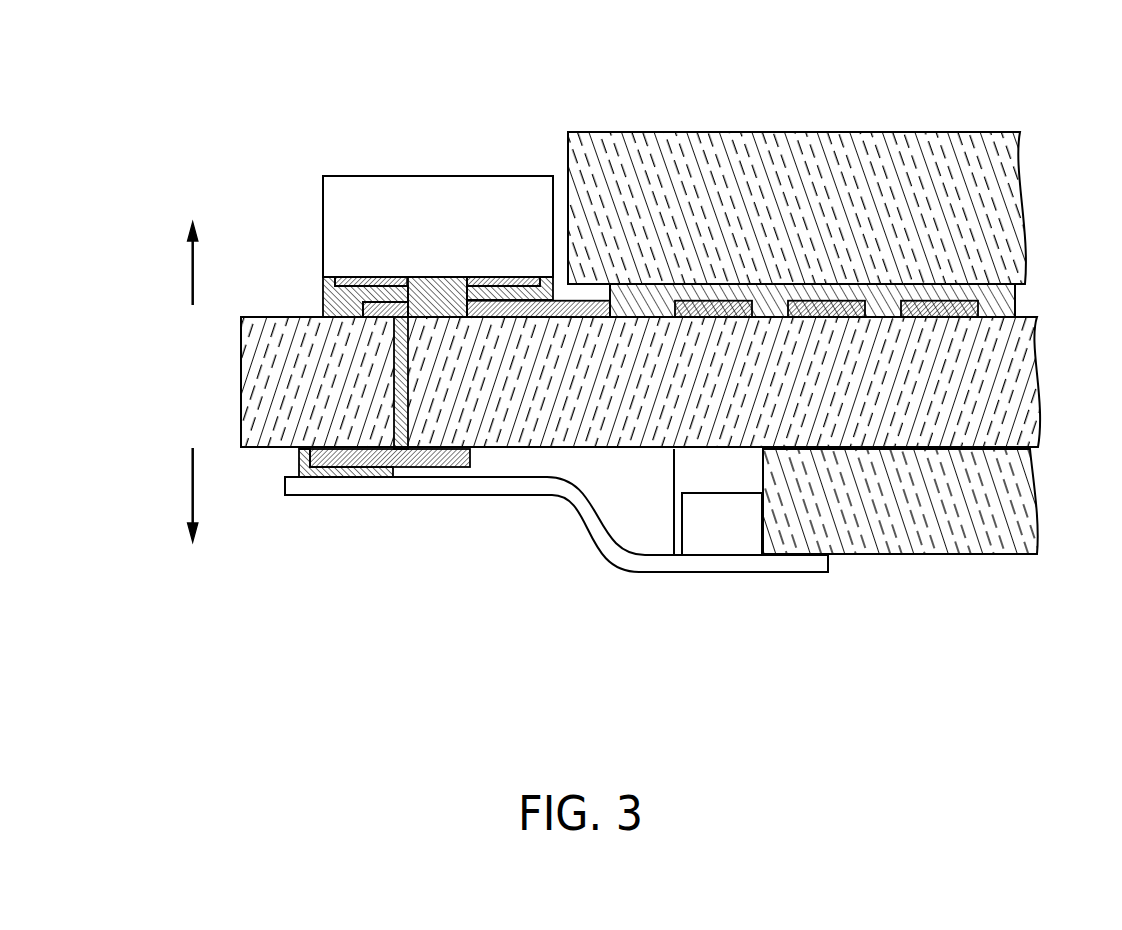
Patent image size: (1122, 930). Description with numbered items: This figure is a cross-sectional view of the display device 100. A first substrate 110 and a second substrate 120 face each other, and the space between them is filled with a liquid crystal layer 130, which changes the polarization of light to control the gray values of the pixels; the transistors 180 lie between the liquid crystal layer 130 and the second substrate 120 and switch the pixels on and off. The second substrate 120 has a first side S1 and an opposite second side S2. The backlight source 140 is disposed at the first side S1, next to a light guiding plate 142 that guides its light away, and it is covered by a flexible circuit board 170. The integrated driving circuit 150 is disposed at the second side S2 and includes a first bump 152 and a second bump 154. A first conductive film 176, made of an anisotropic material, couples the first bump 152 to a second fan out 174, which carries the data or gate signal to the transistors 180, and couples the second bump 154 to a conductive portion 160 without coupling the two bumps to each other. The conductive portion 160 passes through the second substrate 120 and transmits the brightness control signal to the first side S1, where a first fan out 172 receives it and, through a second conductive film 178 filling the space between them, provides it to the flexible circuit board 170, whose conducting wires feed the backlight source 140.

The display device 100 is at (230, 55).
The first substrate 110 is at (928, 165).
The second substrate 120 is at (1014, 393).
The liquid crystal layer 130 is at (997, 305).
The backlight source 140 is at (722, 533).
The light guiding plate 142 is at (934, 528).
The integrated driving circuit 150 is at (435, 207).
The first bump 152 is at (497, 280).
The second bump 154 is at (365, 277).
The conductive portion 160 is at (393, 385).
The flexible circuit board 170 is at (365, 485).
The first fan out 172 is at (433, 467).
The second fan out 174 is at (583, 300).
The first conductive film 176 is at (340, 302).
The second conductive film 178 is at (298, 464).
The transistors 180 is at (943, 318).
The first side S1 is at (179, 495).
The second side S2 is at (179, 263).